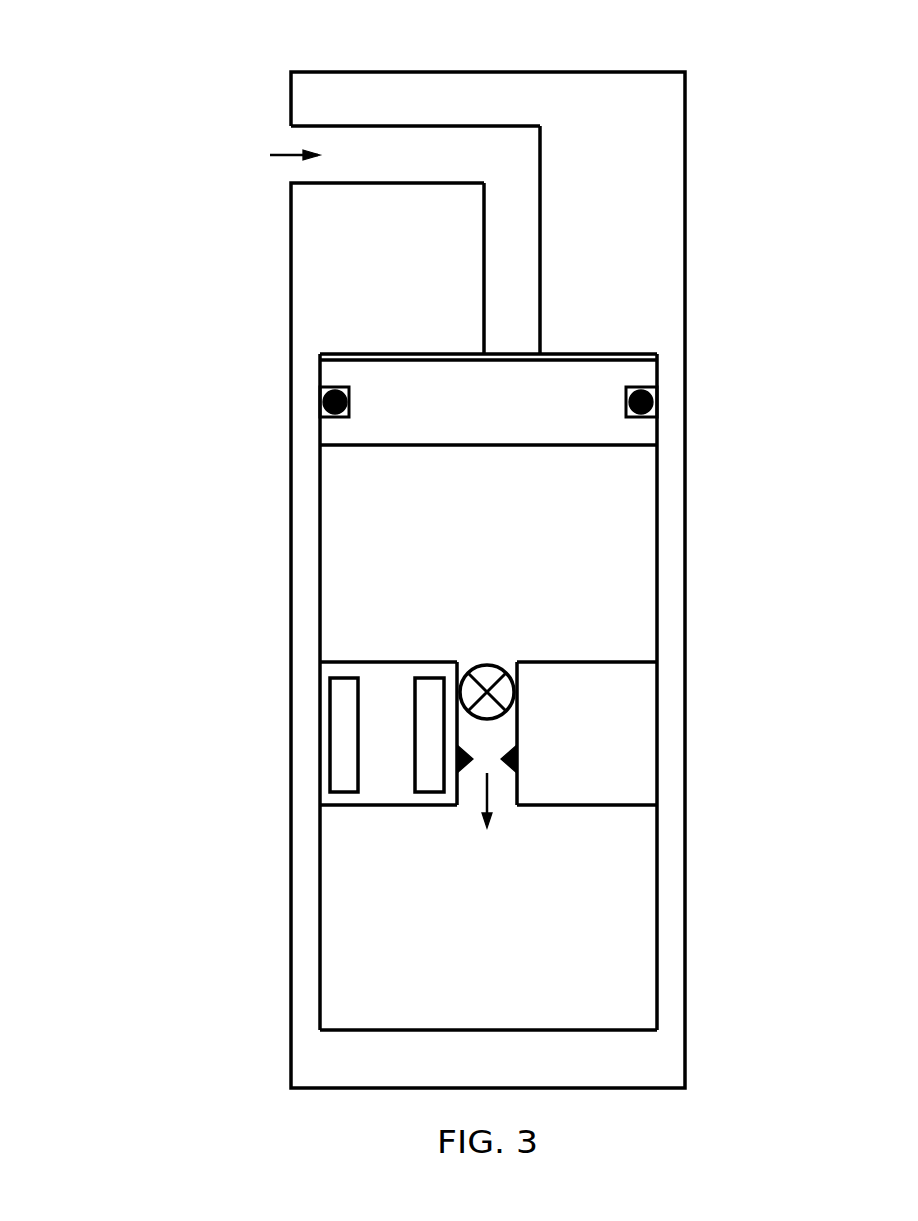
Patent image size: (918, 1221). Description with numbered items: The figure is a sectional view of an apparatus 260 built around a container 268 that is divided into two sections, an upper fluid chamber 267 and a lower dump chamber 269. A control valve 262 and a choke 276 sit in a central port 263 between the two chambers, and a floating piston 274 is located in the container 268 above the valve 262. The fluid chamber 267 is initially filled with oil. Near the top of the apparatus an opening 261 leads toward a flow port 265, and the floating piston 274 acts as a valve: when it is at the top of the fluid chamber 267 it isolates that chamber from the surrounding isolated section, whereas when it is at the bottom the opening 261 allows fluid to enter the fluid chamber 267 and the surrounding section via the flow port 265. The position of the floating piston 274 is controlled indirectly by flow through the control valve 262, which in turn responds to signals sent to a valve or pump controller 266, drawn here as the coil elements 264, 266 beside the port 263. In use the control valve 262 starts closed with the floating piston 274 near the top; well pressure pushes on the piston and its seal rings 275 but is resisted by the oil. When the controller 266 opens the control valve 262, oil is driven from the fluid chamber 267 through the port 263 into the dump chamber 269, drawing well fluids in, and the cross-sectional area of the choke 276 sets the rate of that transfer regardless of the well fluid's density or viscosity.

The apparatus 260 is at (430, 550).
The opening 261 is at (288, 147).
The control valve 262 is at (498, 692).
The port 263 is at (518, 727).
The coil 264 is at (345, 697).
The flow port 265 is at (518, 265).
The valve (or pump) controller 266 is at (430, 763).
The fluid chamber 267 is at (332, 523).
The container 268 is at (685, 532).
The dump chamber 269 is at (628, 919).
The floating piston 274 is at (638, 371).
The seal ring 275 is at (320, 402).
The choke 276 is at (518, 758).